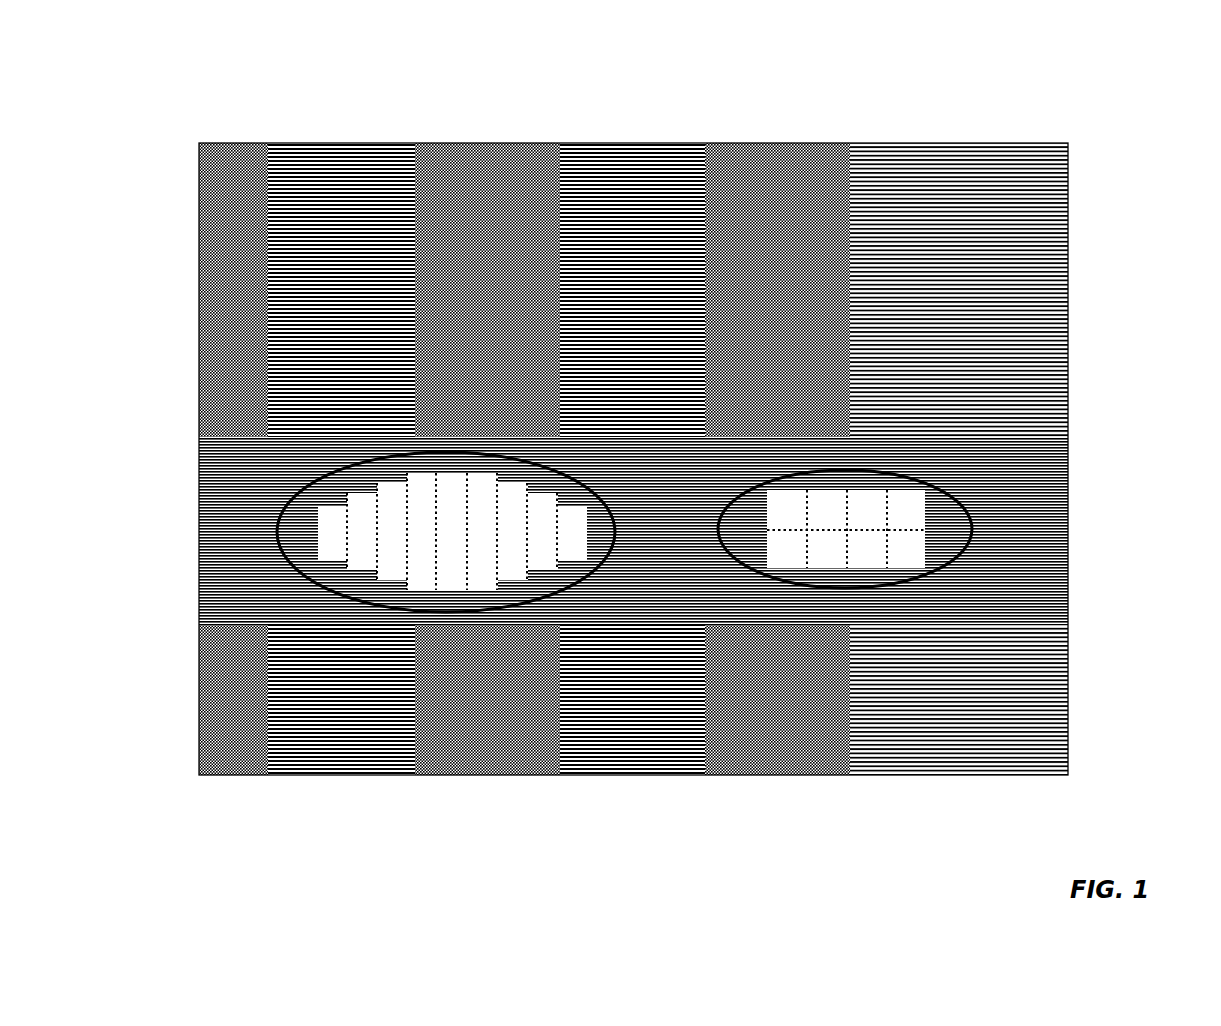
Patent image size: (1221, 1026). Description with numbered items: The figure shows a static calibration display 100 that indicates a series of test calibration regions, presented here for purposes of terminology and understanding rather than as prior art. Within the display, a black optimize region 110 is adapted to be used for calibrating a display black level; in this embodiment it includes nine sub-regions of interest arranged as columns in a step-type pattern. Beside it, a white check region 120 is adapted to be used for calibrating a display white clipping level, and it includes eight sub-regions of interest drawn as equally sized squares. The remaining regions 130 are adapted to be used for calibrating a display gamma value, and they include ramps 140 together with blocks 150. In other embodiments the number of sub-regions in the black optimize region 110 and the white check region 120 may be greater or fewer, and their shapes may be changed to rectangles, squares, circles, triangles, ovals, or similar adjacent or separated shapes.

The static calibration display 100 is at (666, 404).
The black optimize region 110 is at (282, 518).
The white check region 120 is at (962, 549).
The regions 130 is at (1068, 403).
The ramps 140 is at (942, 140).
The blocks 150 is at (1052, 193).